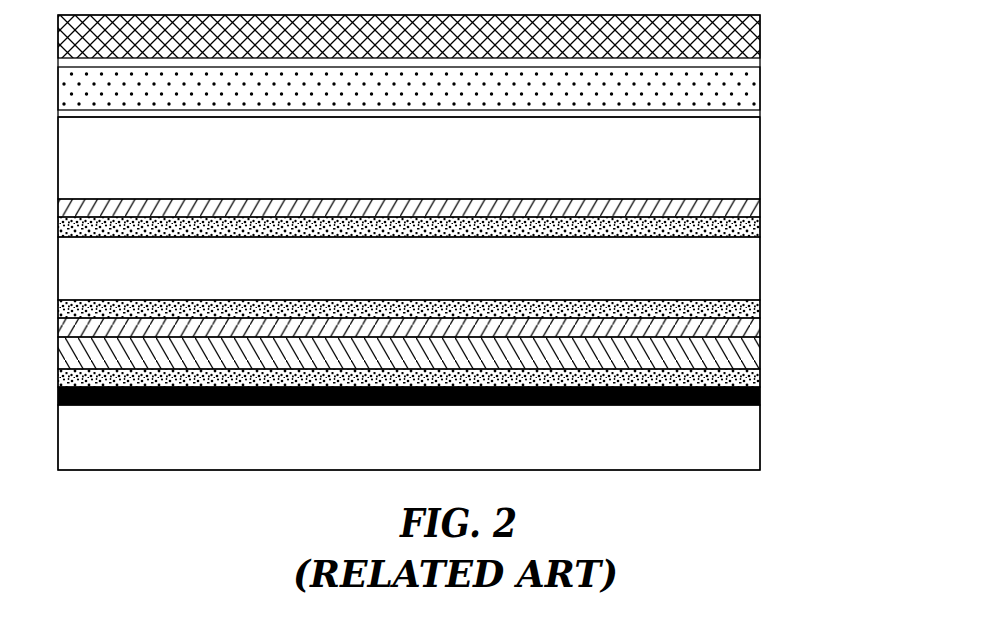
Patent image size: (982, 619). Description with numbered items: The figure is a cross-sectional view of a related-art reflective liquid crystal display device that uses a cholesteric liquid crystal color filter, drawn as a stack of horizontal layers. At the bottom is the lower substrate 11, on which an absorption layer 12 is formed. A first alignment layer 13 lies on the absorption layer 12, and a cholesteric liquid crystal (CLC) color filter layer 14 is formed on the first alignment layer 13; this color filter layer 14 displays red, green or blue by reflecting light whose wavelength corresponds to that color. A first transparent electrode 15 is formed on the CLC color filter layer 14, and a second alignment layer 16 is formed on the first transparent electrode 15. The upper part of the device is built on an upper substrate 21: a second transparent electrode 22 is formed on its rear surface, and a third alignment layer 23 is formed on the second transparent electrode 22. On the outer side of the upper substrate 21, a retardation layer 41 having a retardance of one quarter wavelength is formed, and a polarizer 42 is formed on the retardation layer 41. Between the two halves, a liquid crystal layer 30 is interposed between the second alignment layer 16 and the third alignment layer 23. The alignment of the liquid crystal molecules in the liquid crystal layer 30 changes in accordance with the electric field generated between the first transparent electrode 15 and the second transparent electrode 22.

The lower substrate 11 is at (752, 443).
The absorption layer 12 is at (762, 400).
The first alignment layer 13 is at (762, 378).
The cholesteric liquid crystal (CLC) color filter layer 14 is at (762, 353).
The first transparent electrode 15 is at (762, 331).
The second alignment layer 16 is at (762, 314).
The upper substrate 21 is at (742, 148).
The second transparent electrode 22 is at (750, 209).
The third alignment layer 23 is at (757, 232).
The liquid crystal layer 30 is at (738, 265).
The retardation layer 41 is at (745, 90).
The polarizer 42 is at (745, 41).